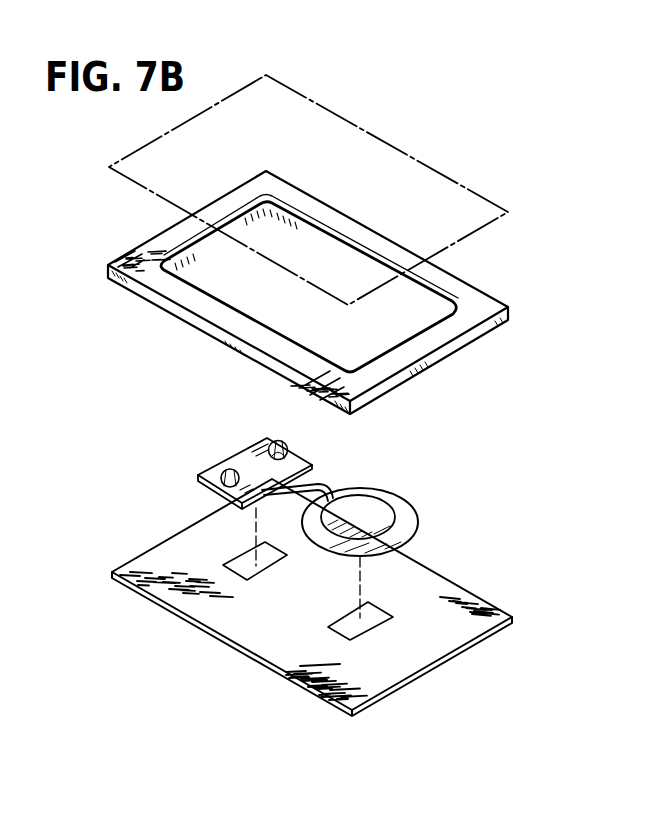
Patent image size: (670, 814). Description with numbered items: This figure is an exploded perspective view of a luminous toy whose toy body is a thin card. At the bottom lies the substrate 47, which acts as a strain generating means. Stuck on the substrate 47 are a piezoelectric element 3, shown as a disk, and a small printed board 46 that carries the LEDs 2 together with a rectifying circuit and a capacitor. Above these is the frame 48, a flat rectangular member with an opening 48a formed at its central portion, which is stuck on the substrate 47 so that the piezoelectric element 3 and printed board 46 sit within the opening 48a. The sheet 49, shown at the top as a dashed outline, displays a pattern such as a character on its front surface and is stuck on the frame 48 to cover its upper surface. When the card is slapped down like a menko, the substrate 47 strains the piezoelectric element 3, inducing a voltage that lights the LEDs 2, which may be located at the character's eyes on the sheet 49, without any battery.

The sheet 49 is at (355, 163).
The frame 48 is at (477, 317).
The opening 48a is at (400, 310).
The printed board 46 is at (202, 470).
The LEDs 2 is at (272, 445).
The piezoelectric element 3 is at (365, 517).
The substrate 47 is at (323, 657).